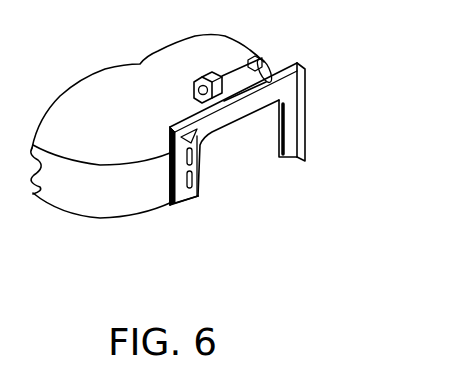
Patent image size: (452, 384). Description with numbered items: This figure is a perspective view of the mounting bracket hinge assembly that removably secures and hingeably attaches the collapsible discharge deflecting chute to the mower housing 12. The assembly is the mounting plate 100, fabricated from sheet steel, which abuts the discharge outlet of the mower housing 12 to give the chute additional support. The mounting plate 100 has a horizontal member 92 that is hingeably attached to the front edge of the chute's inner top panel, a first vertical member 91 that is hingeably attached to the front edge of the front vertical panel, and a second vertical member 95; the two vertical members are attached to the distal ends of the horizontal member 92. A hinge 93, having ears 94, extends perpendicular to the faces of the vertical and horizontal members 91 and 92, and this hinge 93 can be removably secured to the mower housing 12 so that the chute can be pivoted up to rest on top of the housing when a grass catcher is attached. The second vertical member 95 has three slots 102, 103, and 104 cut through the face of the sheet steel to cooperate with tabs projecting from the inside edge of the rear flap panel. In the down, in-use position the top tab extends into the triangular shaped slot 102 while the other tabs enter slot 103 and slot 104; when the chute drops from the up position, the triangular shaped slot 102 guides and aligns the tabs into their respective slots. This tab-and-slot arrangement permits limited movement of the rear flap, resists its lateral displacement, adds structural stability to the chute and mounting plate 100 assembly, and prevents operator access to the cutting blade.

The mower housing 12 is at (122, 137).
The first vertical member 91 is at (307, 128).
The horizontal member 92 is at (236, 124).
The hinge 93 is at (219, 65).
The ears 94 is at (194, 87).
The second vertical member 95 is at (216, 168).
The mounting plate 100 is at (315, 80).
The triangular shaped slot 102 is at (186, 155).
The slot 103 is at (188, 172).
The slot 104 is at (198, 195).